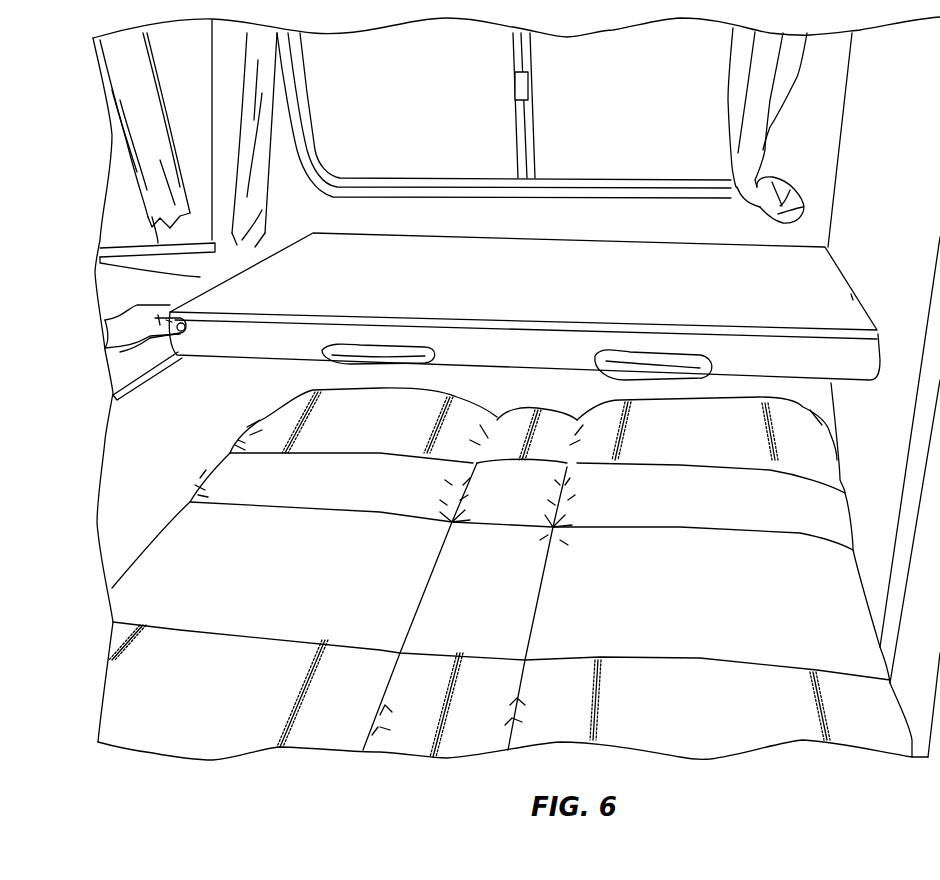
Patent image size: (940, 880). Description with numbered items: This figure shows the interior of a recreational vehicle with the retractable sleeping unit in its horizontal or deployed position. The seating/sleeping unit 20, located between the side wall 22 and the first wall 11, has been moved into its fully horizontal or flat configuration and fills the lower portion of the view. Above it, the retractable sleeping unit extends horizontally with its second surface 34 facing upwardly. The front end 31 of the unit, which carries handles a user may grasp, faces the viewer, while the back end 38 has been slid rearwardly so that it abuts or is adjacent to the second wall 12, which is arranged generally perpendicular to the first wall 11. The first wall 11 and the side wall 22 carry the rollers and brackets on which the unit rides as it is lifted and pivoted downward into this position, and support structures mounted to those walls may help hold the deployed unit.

The first wall 11 is at (904, 197).
The second wall 12 is at (719, 232).
The seating/sleeping unit 20 is at (470, 593).
The second or side wall 22 is at (140, 515).
The front end 31 is at (768, 350).
The second surface 34 is at (551, 293).
The back end 38 is at (496, 299).